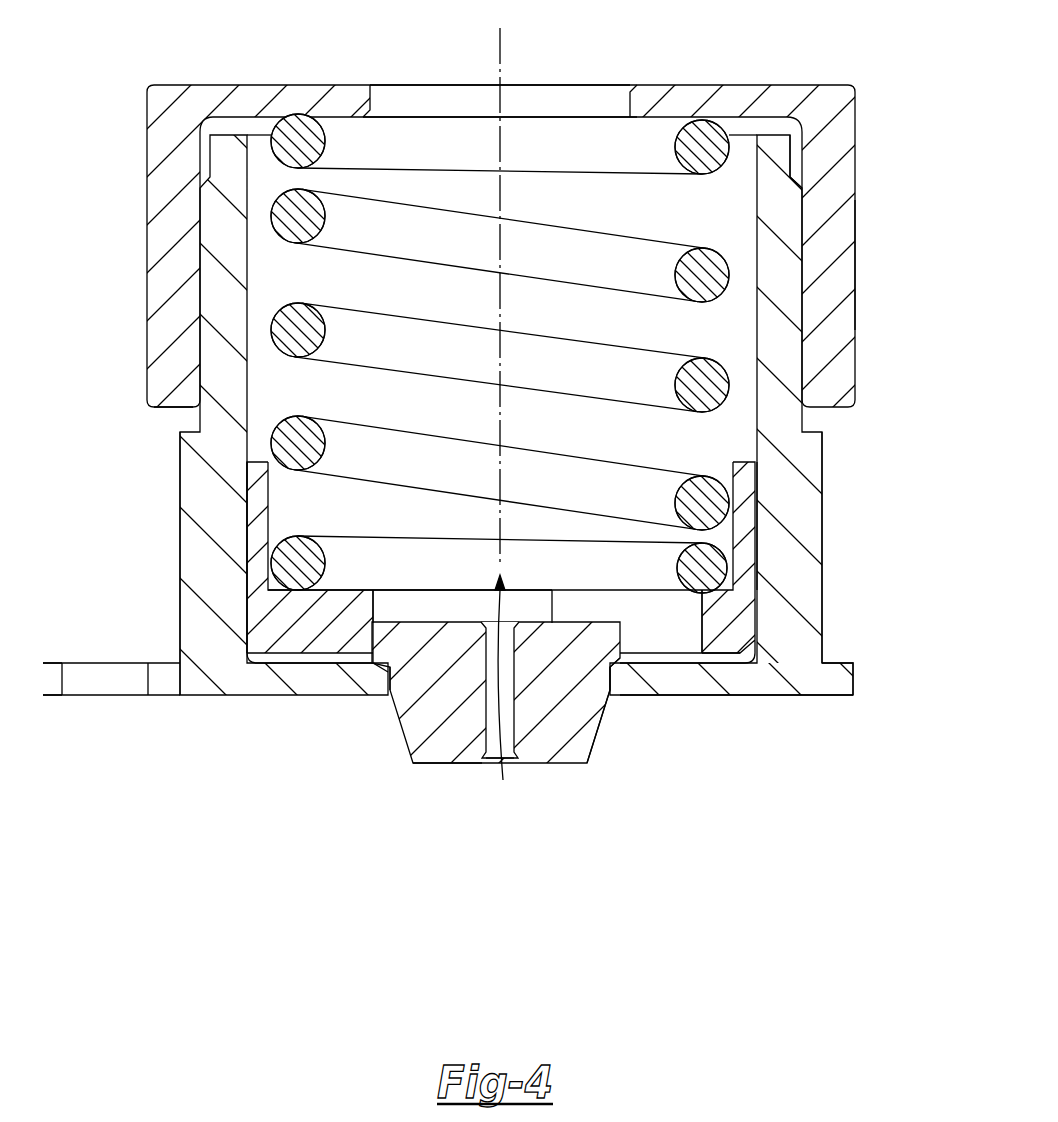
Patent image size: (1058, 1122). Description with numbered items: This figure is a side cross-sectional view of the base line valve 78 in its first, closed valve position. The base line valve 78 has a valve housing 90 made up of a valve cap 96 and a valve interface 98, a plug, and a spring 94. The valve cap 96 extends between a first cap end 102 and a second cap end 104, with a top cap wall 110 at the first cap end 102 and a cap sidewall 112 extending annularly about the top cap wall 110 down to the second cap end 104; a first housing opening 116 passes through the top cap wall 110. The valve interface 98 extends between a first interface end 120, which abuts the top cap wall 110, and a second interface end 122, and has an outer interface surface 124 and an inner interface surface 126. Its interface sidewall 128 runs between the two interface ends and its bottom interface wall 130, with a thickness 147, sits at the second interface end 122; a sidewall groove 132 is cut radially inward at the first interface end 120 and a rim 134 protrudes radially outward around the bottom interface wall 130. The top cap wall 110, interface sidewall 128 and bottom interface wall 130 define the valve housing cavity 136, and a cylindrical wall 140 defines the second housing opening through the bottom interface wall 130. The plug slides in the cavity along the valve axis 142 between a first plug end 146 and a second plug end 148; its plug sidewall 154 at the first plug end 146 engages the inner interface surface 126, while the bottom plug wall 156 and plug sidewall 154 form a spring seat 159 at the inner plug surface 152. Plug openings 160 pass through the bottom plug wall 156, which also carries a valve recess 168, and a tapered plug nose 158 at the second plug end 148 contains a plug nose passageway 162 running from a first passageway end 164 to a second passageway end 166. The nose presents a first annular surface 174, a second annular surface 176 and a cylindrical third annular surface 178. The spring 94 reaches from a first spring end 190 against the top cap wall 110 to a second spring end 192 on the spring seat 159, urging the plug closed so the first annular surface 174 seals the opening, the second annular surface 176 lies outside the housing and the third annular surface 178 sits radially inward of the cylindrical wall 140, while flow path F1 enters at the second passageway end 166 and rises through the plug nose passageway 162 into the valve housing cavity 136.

The base line valve 78 is at (140, 35).
The valve housing 90 is at (870, 106).
The spring 94 is at (600, 301).
The valve cap 96 is at (129, 254).
The valve interface 98 is at (168, 646).
The first cap end 102 is at (192, 107).
The second cap end 104 is at (158, 393).
The top cap wall 110 is at (690, 95).
The cap sidewall 112 is at (848, 262).
The first housing opening 116 is at (456, 100).
The first interface end 120 is at (227, 145).
The second interface end 122 is at (205, 696).
The outer interface surface 124 is at (822, 597).
The inner interface surface 126 is at (822, 432).
The interface sidewall 128 is at (217, 495).
The bottom interface wall 130 is at (780, 687).
The sidewall groove 132 is at (790, 152).
The rim 134 is at (852, 655).
The valve housing cavity 136 is at (732, 183).
The cylindrical wall 140 is at (390, 690).
The valve axis 142 is at (508, 44).
The first plug end 146 is at (738, 478).
The thickness 147 is at (53, 681).
The second plug end 148 is at (547, 752).
The inner plug surface 152 is at (270, 517).
The plug sidewall 154 is at (255, 542).
The bottom plug wall 156 is at (720, 648).
The plug nose 158 is at (442, 765).
The spring seat 159 is at (343, 590).
The plug openings 160 is at (702, 608).
The plug nose passageway 162 is at (520, 708).
The first passageway end 164 is at (485, 623).
The second passageway end 166 is at (491, 763).
The valve recess 168 is at (397, 603).
The first annular surface 174 is at (622, 669).
The second annular surface 176 is at (590, 756).
The third annular surface 178 is at (622, 692).
The first spring end 190 is at (293, 128).
The second spring end 192 is at (722, 563).
The flow path F1 is at (510, 606).